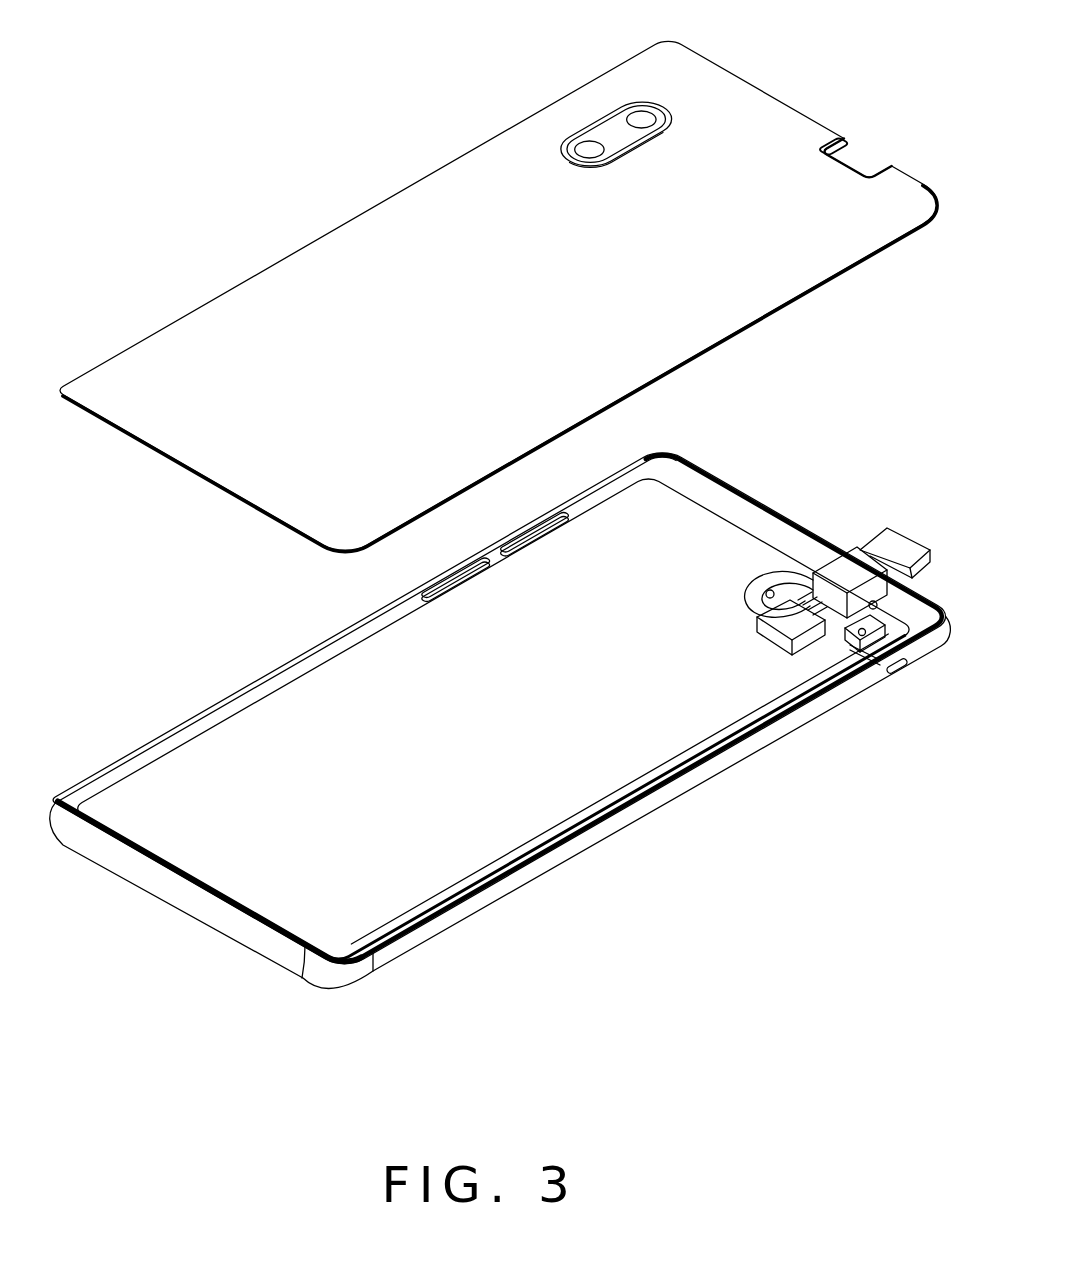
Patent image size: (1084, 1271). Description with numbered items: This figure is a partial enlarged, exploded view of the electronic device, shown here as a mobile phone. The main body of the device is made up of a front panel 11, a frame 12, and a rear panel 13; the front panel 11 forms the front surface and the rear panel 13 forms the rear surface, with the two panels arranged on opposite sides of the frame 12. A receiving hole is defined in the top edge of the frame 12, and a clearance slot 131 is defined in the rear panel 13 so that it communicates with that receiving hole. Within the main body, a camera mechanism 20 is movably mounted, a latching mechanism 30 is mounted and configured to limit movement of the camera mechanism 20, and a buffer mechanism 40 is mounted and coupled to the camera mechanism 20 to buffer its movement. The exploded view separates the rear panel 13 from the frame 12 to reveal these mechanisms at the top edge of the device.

The front panel 11 is at (320, 695).
The frame 12 is at (668, 793).
The rear panel 13 is at (717, 100).
The clearance slot 131 is at (840, 134).
The camera mechanism 20 is at (895, 543).
The latching mechanism 30 is at (877, 627).
The buffer mechanism 40 is at (790, 573).